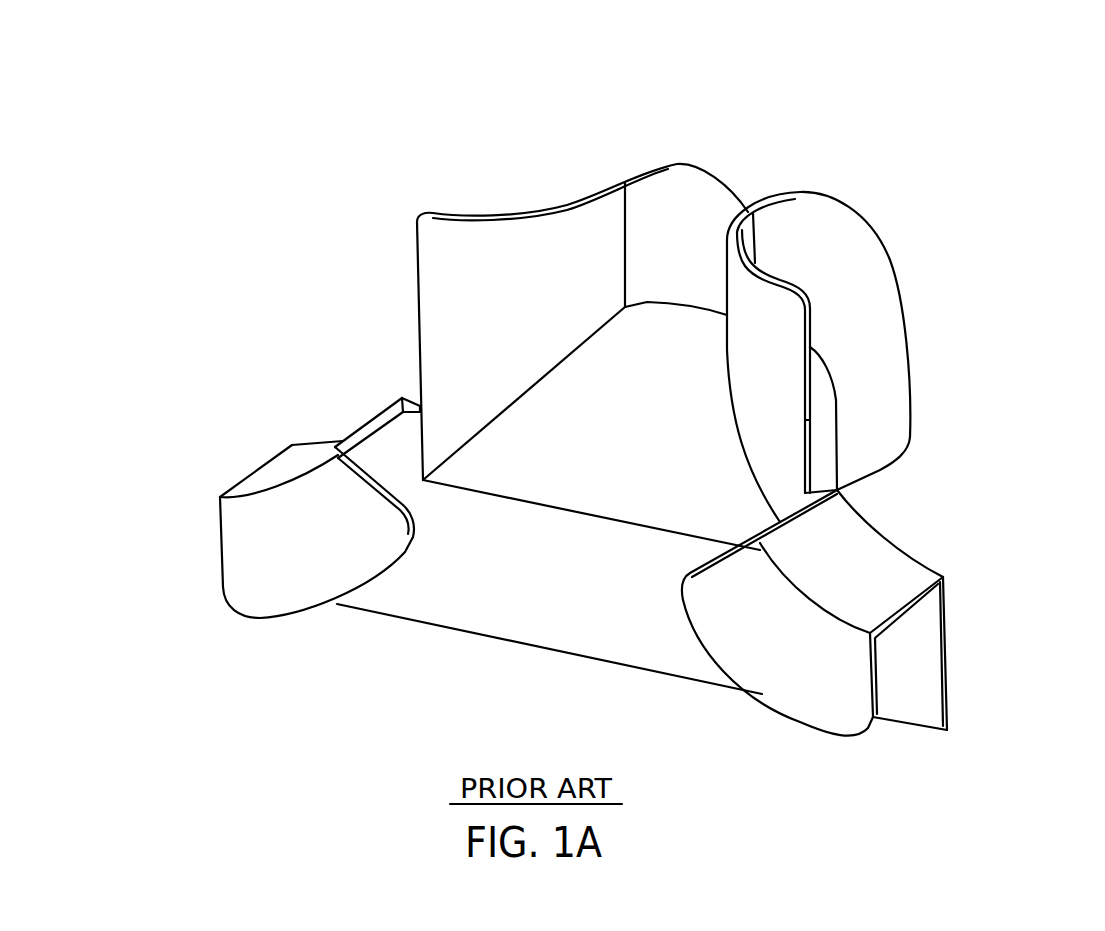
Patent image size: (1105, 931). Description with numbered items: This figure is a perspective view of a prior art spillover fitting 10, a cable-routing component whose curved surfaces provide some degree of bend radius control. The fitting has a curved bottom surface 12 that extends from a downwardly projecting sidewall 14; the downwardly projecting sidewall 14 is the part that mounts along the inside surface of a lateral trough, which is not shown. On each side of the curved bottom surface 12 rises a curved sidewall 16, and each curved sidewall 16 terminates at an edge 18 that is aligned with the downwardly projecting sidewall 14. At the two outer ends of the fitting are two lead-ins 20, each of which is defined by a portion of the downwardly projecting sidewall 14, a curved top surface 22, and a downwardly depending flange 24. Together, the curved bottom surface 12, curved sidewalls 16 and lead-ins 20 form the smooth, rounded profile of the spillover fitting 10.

The spillover fitting 10 is at (870, 164).
The curved bottom surface 12 is at (650, 455).
The downwardly projecting sidewall 14 is at (600, 590).
The curved sidewall 16 is at (467, 290).
The edge 18 is at (417, 262).
The lead-in 20 is at (253, 480).
The curved top surface 22 is at (298, 457).
The downwardly depending flange 24 is at (282, 565).